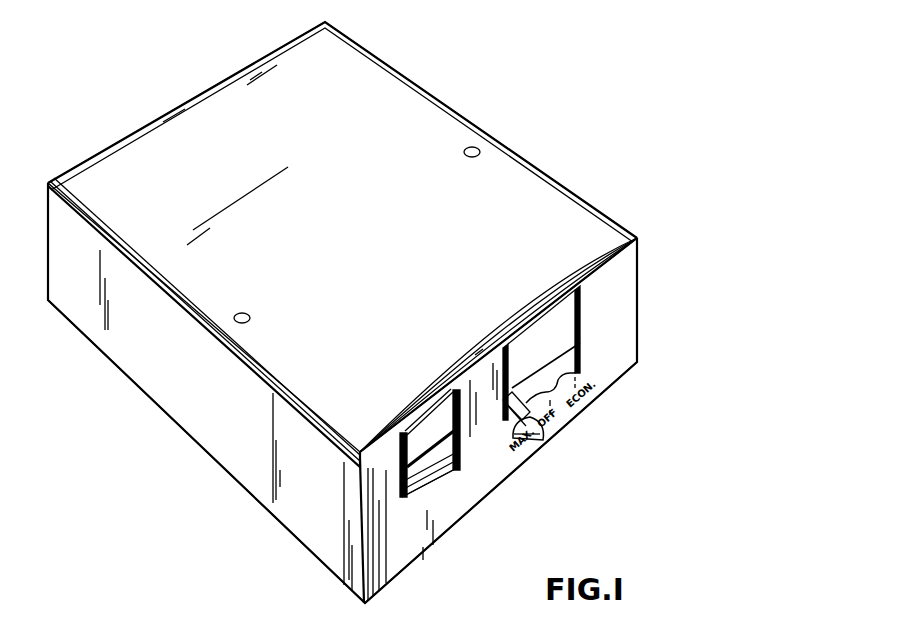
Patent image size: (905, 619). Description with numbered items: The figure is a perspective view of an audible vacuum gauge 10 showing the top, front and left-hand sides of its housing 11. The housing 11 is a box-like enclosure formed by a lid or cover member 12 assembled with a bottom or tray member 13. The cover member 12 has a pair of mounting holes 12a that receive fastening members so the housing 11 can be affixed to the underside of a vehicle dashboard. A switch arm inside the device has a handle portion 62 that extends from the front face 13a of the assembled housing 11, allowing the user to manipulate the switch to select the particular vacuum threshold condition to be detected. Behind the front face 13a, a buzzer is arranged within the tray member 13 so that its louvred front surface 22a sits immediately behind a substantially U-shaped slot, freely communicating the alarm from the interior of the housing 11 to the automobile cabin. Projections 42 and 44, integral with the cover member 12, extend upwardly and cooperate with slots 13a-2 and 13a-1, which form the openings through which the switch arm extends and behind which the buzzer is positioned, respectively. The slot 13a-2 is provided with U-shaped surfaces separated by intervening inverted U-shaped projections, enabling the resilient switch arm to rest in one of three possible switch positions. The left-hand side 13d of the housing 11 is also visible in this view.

The audible vacuum gauge 10 is at (592, 64).
The housing 11 is at (301, 559).
The cover member 12 is at (365, 82).
The mounting holes 12a is at (464, 152).
The tray member 13 is at (244, 501).
The front face 13a is at (478, 470).
The slot 13a-1 is at (580, 357).
The slot 13a-2 is at (415, 502).
The left side wall 13d is at (220, 433).
The louvred front surface 22a is at (427, 467).
The projection 42 is at (543, 332).
The projection 44 is at (428, 423).
The handle portion 62 is at (532, 434).